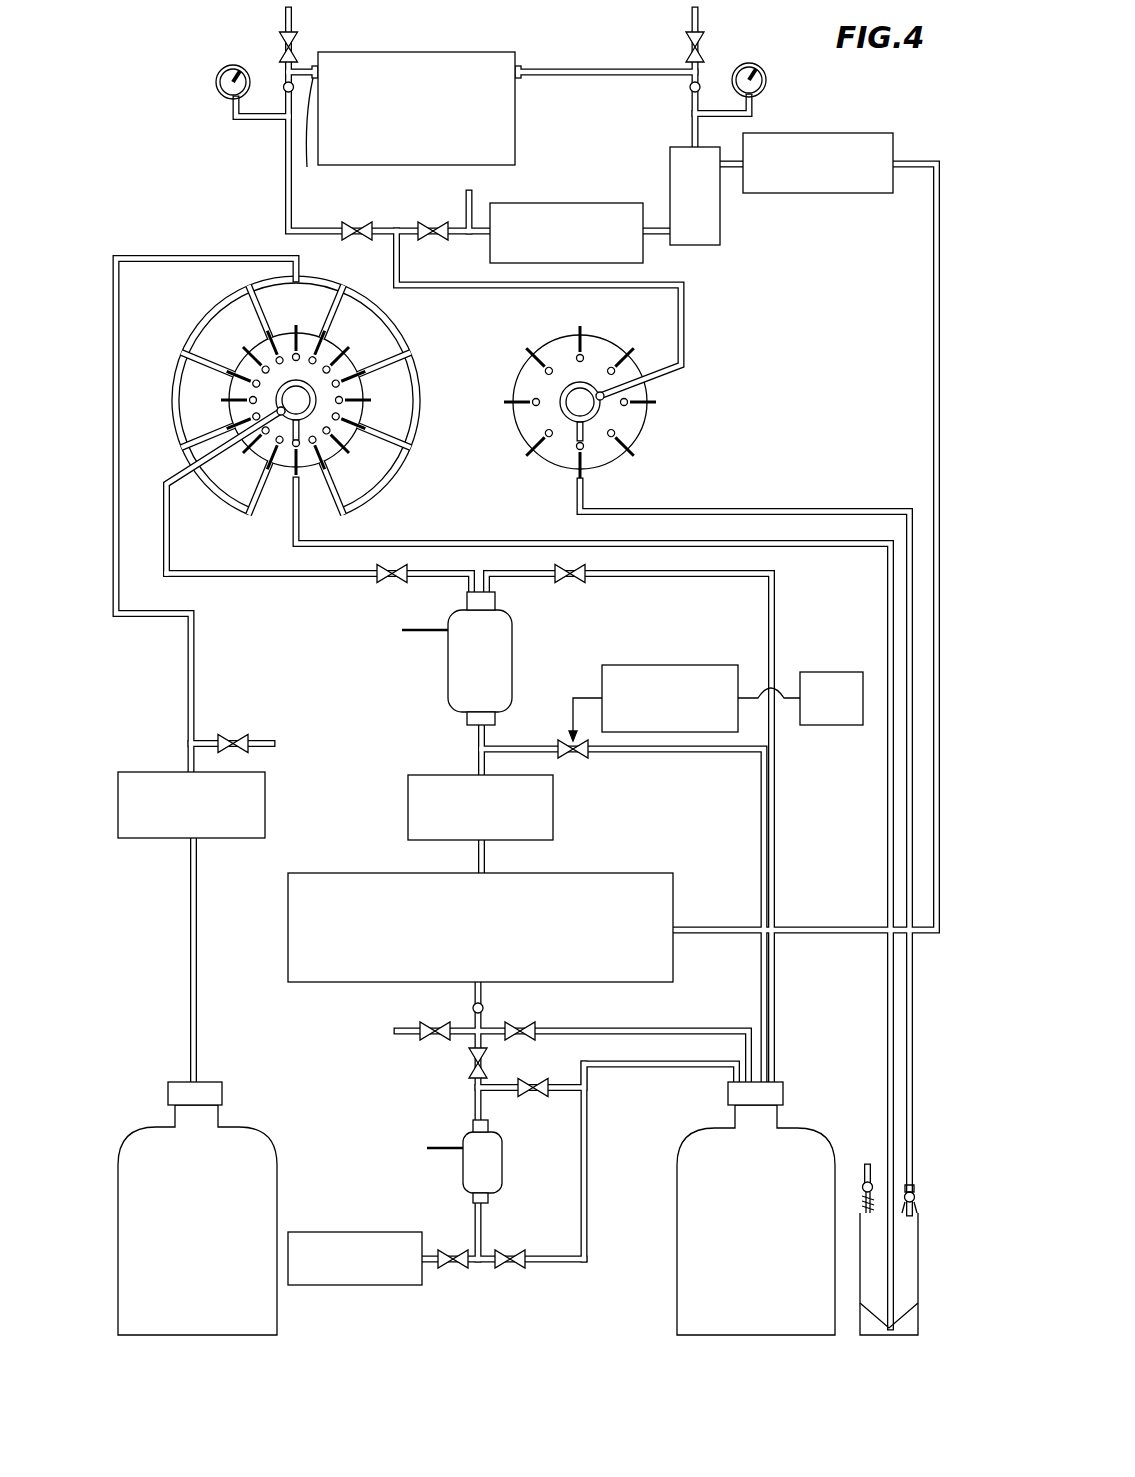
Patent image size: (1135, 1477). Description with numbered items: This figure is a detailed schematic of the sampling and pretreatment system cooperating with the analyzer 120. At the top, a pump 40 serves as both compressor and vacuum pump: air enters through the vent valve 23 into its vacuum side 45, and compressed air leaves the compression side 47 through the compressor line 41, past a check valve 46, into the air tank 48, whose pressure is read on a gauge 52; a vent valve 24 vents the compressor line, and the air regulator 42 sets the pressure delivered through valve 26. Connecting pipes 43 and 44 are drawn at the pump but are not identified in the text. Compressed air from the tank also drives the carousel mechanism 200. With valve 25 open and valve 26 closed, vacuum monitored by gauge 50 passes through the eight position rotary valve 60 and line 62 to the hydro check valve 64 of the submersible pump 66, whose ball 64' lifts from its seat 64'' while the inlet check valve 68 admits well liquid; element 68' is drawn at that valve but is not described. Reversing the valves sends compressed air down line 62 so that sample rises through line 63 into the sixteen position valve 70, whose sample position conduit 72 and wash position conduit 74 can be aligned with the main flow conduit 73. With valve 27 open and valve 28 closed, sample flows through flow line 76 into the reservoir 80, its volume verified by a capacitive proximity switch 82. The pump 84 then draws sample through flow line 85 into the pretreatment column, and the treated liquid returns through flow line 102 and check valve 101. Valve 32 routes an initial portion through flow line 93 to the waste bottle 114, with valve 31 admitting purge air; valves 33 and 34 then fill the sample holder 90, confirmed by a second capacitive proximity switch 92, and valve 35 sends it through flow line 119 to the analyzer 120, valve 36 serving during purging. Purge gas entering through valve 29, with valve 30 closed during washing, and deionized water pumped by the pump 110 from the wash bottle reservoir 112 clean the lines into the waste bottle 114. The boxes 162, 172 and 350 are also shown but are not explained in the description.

The vent valve 23 is at (296, 45).
The vent valve 24 is at (702, 47).
The valve 25 is at (359, 223).
The valve 26 is at (433, 223).
The valve 27 is at (383, 583).
The valve 28 is at (572, 583).
The valve 29 is at (237, 736).
The valve 30 is at (578, 758).
The valve 31 is at (432, 1037).
The valve 32 is at (520, 1038).
The valve 33 is at (472, 1063).
The valve 34 is at (535, 1098).
The valve 35 is at (455, 1268).
The valve 36 is at (513, 1268).
The pump 40 is at (397, 52).
The compressor line 41 is at (645, 78).
The air regulator 42 is at (552, 203).
The vacuum line 43 is at (282, 165).
The vacuum line connector 44 is at (284, 84).
The vacuum side 45 is at (310, 131).
The check valve 46 is at (662, 111).
The compression side 47 is at (521, 78).
The air tank 48 is at (722, 231).
The gauge 50 is at (218, 92).
The gauge 52 is at (767, 80).
The eight position rotary valve 60 is at (658, 430).
The line 62 is at (775, 512).
The line 63 is at (872, 548).
The hydro check valve 64 is at (938, 1191).
The ball 64' is at (937, 1214).
The seat 64'' is at (937, 1168).
The submersible pump 66 is at (905, 1290).
The check valve 68 is at (849, 1153).
The vent probe tip 68' is at (868, 1173).
The sixteen position valve 70 is at (408, 335).
The sample position conduit 72 is at (302, 468).
The main flow conduit 73 is at (300, 430).
The wash position conduit 74 is at (275, 440).
The flow line 76 is at (295, 578).
The reservoir 80 is at (513, 667).
The capacitive proximity switch 82 is at (433, 636).
The pump 84 is at (408, 812).
The flow line 85 is at (488, 857).
The sample holder 90 is at (503, 1170).
The capacitive proximity switch 92 is at (445, 1152).
The flow line 93 is at (640, 1027).
The check valve 101 is at (471, 1007).
The flow line 102 is at (484, 991).
The pump 110 is at (178, 846).
The wash bottle reservoir 112 is at (140, 1130).
The waste bottle 114 is at (795, 1128).
The flow line 119 is at (430, 1265).
The analyzer 120 is at (355, 1285).
The valve operator 162 is at (682, 665).
The CPU 172 is at (808, 726).
The carousel mechanism 200 is at (605, 873).
The carousel controller 350 is at (873, 133).